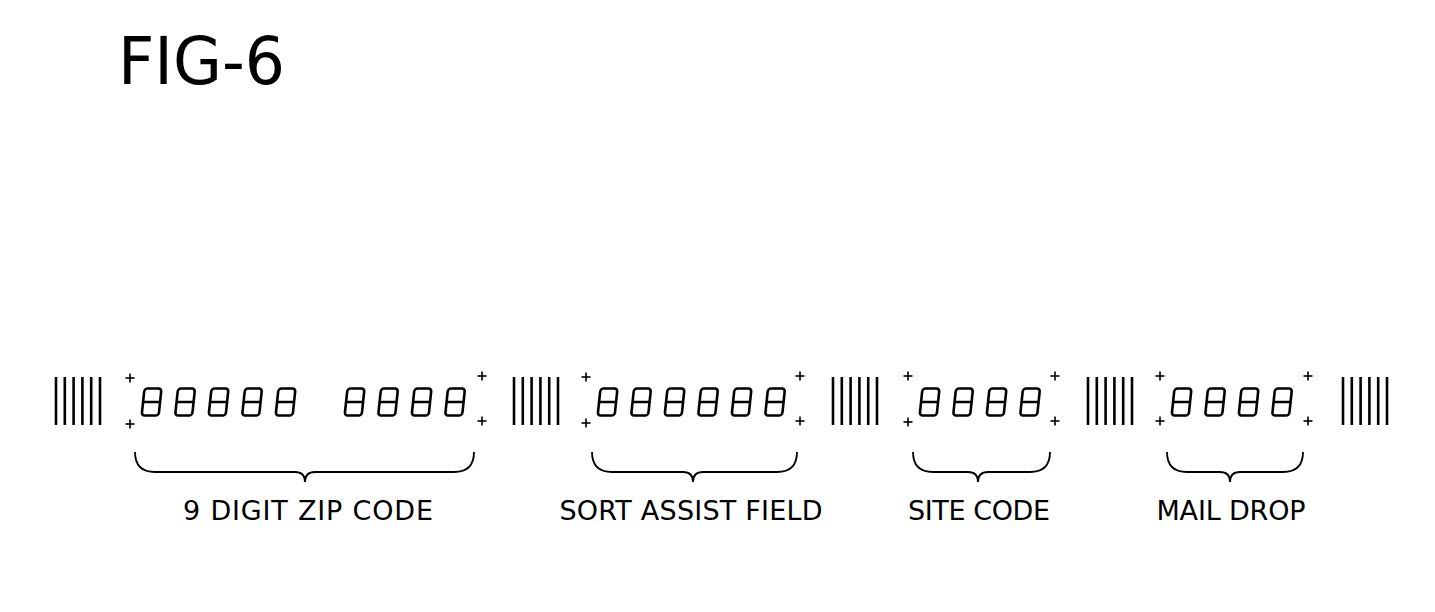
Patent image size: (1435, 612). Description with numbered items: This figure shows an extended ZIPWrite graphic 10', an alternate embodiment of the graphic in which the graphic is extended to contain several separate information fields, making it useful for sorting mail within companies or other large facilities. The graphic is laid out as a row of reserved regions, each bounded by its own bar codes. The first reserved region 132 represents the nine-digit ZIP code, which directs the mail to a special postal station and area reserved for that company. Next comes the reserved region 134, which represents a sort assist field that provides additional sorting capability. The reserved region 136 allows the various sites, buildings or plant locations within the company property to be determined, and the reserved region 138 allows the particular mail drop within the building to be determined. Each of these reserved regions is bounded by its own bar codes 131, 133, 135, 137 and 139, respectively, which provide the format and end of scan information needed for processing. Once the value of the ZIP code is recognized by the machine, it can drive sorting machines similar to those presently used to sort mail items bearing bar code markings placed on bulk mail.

The extended ZIPWrite graphic 10' is at (739, 281).
The bar code 131 is at (77, 378).
The reserved region 132 is at (290, 376).
The bar code 133 is at (536, 377).
The reserved region 134 is at (695, 376).
The bar code 135 is at (856, 377).
The reserved region 136 is at (983, 376).
The bar code 137 is at (1106, 377).
The reserved region 138 is at (1237, 376).
The bar code 139 is at (1365, 377).